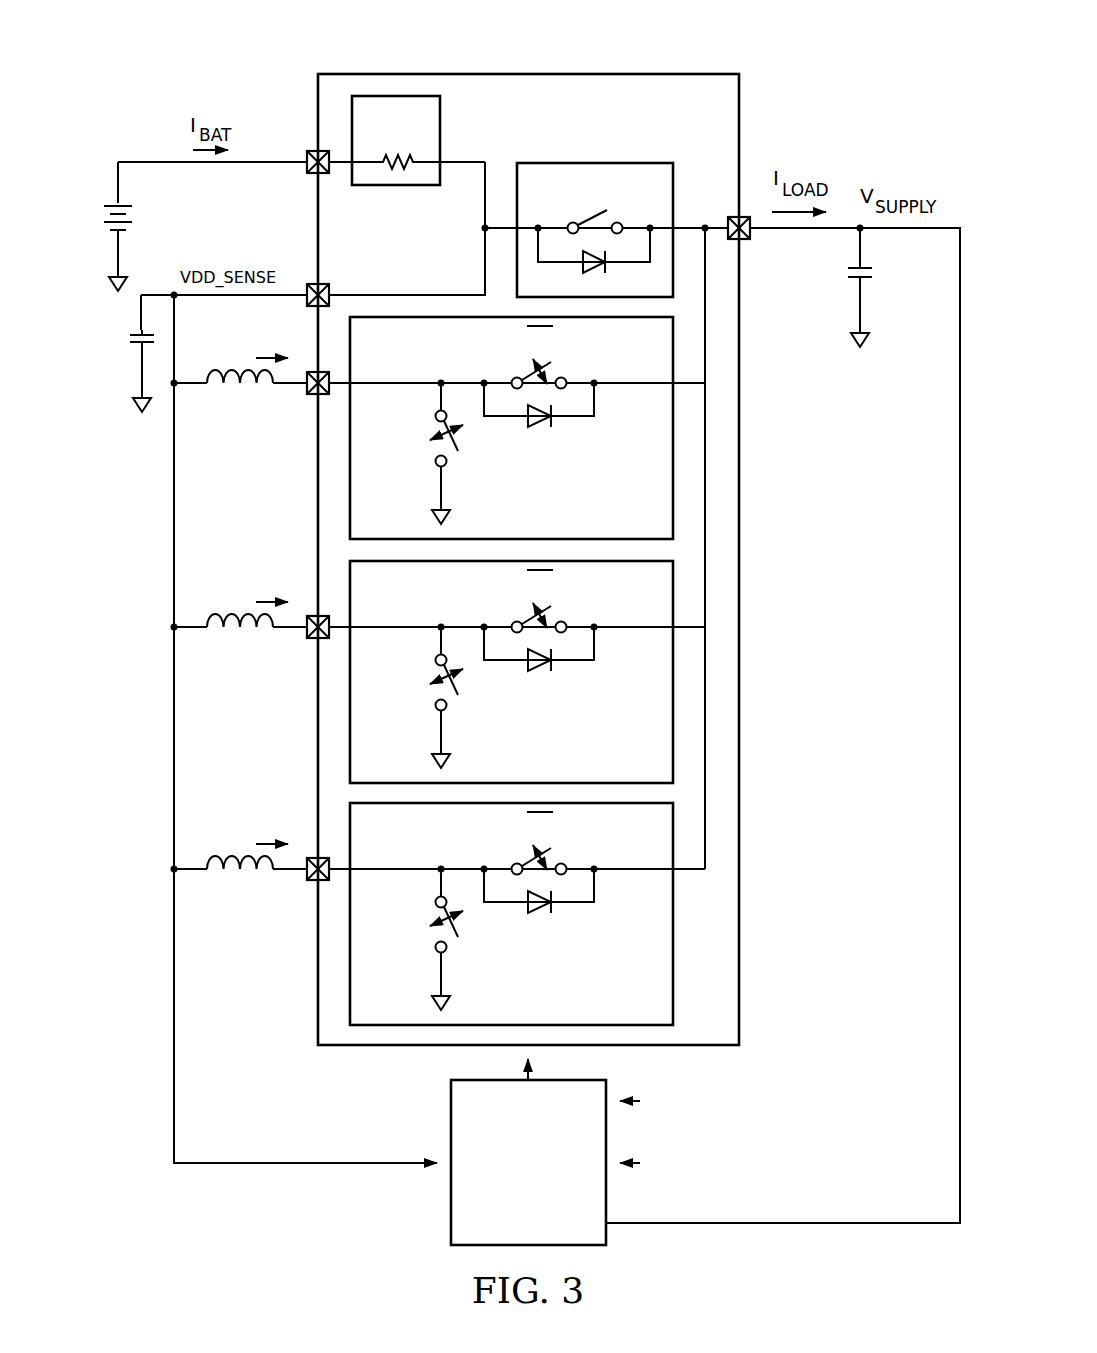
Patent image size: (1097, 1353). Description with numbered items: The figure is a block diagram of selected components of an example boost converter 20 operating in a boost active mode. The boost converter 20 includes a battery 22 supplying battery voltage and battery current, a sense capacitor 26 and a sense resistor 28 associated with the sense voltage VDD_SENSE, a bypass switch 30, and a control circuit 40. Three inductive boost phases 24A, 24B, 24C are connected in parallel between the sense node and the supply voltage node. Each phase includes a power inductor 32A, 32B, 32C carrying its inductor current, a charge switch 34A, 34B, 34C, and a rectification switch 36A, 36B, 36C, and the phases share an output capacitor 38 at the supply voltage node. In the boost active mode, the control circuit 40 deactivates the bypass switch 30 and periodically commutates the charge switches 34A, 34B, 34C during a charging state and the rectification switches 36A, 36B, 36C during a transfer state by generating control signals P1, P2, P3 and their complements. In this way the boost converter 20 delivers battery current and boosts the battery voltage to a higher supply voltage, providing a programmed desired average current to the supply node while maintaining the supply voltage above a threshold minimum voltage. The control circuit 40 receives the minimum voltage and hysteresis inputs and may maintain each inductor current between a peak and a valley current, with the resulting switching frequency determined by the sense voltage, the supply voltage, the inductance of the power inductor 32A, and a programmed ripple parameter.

The boost converter 20 is at (244, 54).
The battery 22 is at (135, 212).
The inductive boost phase 24A is at (574, 383).
The inductive boost phase 24B is at (574, 505).
The inductive boost phase 24C is at (574, 626).
The sense capacitor 26 is at (130, 336).
The sense resistor 28 is at (397, 155).
The bypass switch 30 is at (588, 214).
The power inductor 32A is at (232, 365).
The power inductor 32B is at (232, 609).
The power inductor 32C is at (232, 851).
The charge switch 34A is at (458, 443).
The charge switch 34B is at (458, 687).
The charge switch 34C is at (458, 929).
The rectification switch 36A is at (531, 377).
The rectification switch 36B is at (531, 621).
The rectification switch 36C is at (531, 863).
The output capacitor 38 is at (873, 274).
The control circuit 40 is at (513, 1207).